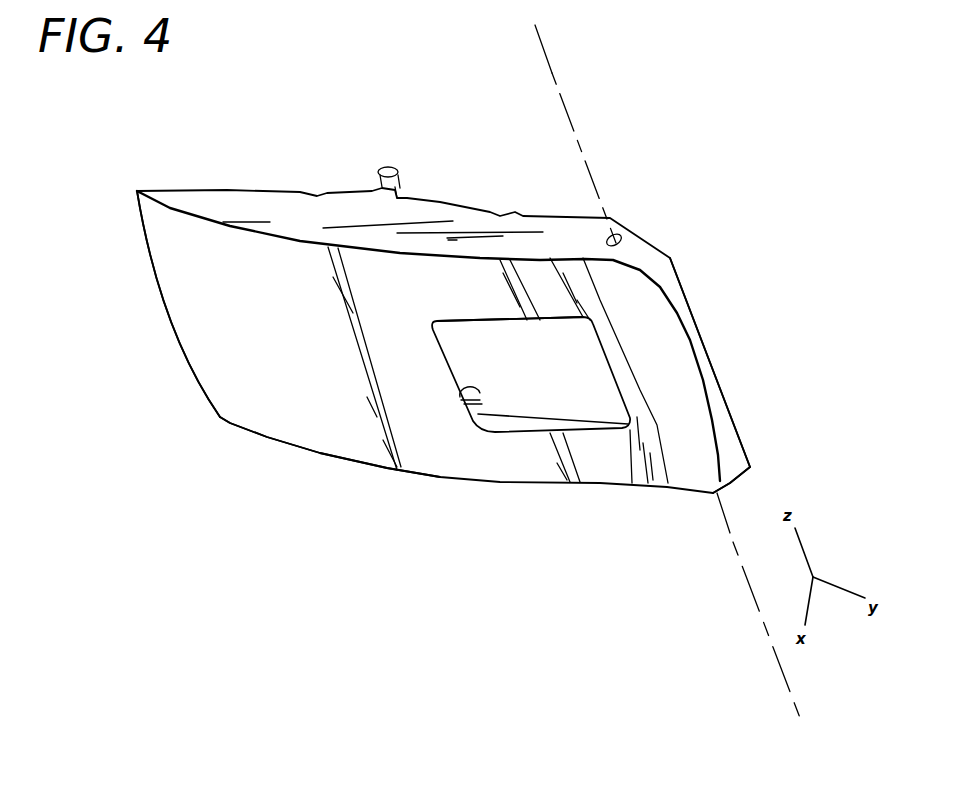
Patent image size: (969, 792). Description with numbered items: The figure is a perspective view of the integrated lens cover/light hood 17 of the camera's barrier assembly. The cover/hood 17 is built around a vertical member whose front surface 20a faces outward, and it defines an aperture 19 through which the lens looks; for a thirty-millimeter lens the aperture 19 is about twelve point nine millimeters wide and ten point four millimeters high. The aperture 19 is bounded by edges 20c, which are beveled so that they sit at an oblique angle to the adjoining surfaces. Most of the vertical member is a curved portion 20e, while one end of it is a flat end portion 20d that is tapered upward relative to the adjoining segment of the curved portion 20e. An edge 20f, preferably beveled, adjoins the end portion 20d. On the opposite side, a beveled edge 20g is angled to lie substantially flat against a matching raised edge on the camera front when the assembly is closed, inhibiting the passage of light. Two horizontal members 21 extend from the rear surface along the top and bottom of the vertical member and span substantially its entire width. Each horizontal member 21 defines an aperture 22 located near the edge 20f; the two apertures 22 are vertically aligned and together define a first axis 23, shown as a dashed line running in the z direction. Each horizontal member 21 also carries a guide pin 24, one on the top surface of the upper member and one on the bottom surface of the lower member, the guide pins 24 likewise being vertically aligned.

The integrated lens cover/light hood 17 is at (120, 193).
The aperture 19 is at (563, 402).
The front surface 20a is at (306, 328).
The edges 20c is at (452, 318).
The end portion 20d is at (722, 477).
The curved portion 20e is at (267, 437).
The edge 20f is at (723, 393).
The edge 20g is at (150, 268).
The horizontal members 21 is at (262, 200).
The aperture 22 is at (624, 236).
The first axis 23 is at (541, 43).
The guide pin 24 is at (397, 167).